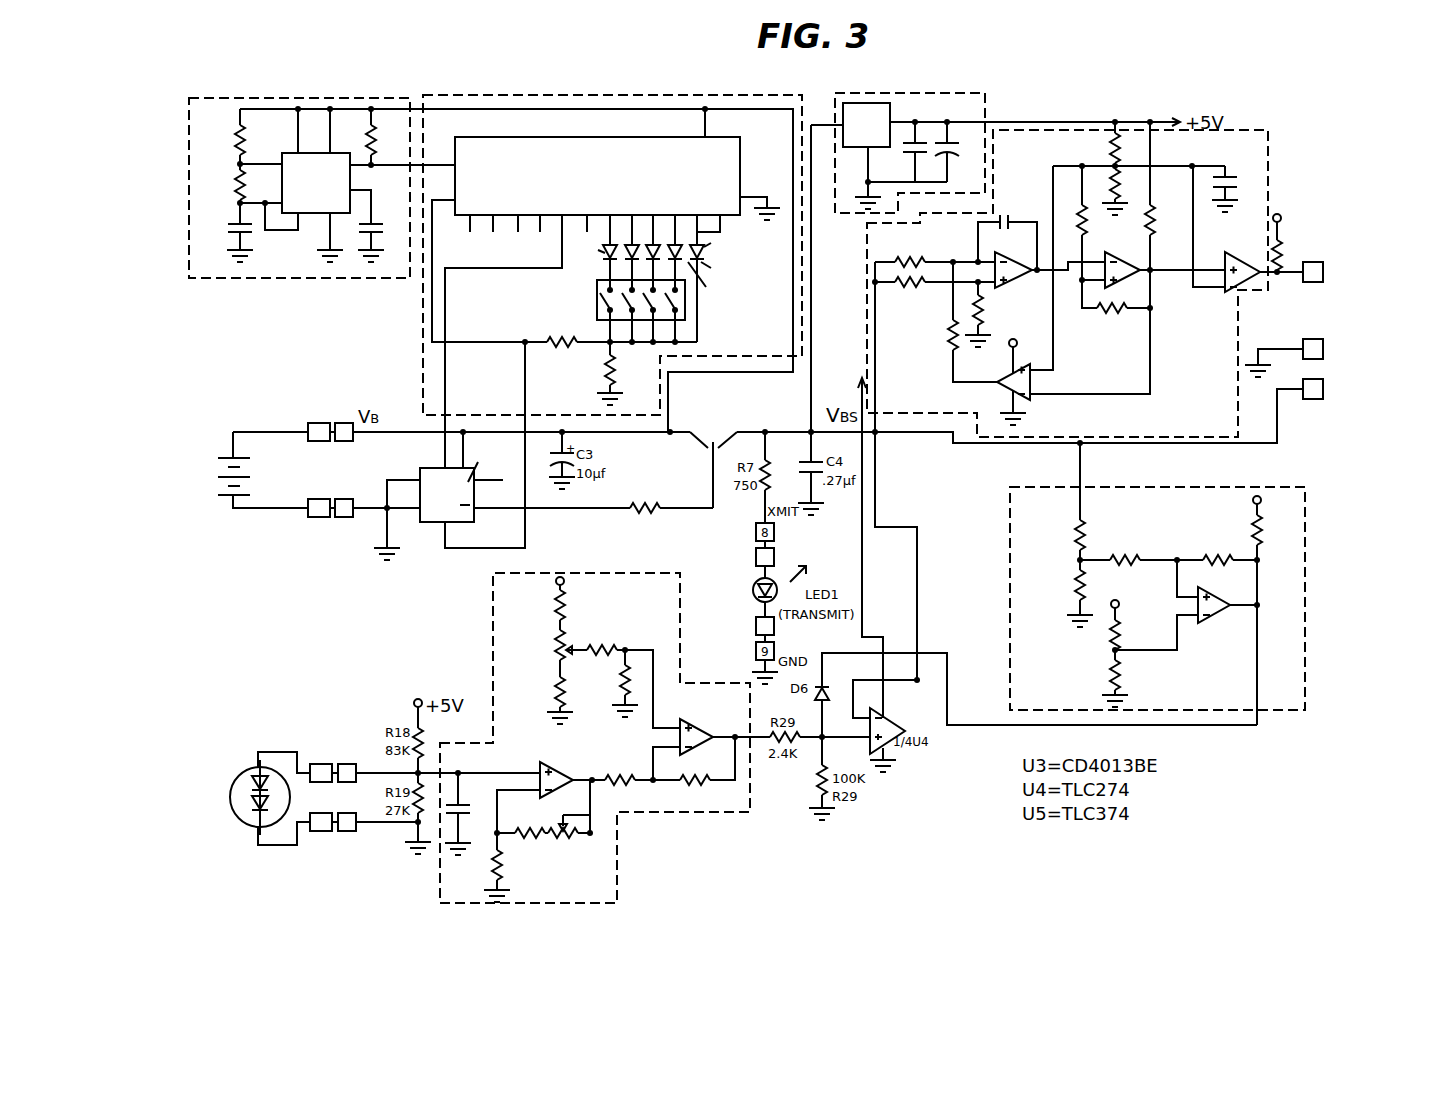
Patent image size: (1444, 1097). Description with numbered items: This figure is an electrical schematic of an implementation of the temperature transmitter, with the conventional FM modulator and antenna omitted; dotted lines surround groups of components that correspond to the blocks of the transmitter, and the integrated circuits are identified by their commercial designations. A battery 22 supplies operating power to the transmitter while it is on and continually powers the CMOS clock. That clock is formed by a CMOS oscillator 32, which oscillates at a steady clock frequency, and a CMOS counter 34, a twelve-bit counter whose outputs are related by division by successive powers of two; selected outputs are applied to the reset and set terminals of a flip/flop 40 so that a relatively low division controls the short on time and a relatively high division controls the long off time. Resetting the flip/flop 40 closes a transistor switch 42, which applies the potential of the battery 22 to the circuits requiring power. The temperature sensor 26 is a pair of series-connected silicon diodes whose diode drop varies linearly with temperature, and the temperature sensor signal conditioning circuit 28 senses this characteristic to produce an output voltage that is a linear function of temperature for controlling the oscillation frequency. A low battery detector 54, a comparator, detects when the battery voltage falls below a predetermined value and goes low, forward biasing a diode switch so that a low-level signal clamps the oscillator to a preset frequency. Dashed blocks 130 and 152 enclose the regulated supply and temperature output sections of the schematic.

The battery 22 is at (218, 468).
The temperature sensor 26 is at (212, 791).
The temperature sensor signal conditioning circuit 28 is at (620, 866).
The CMOS oscillator 32 is at (189, 120).
The CMOS counter 34 is at (661, 96).
The flip/flop 40 is at (428, 468).
The transistor switch 42 is at (705, 457).
The low battery detector 54 is at (1306, 494).
The temperature sensing circuit 130 is at (1258, 126).
The voltage regulator circuit (RG1 78L05) 152 is at (945, 96).